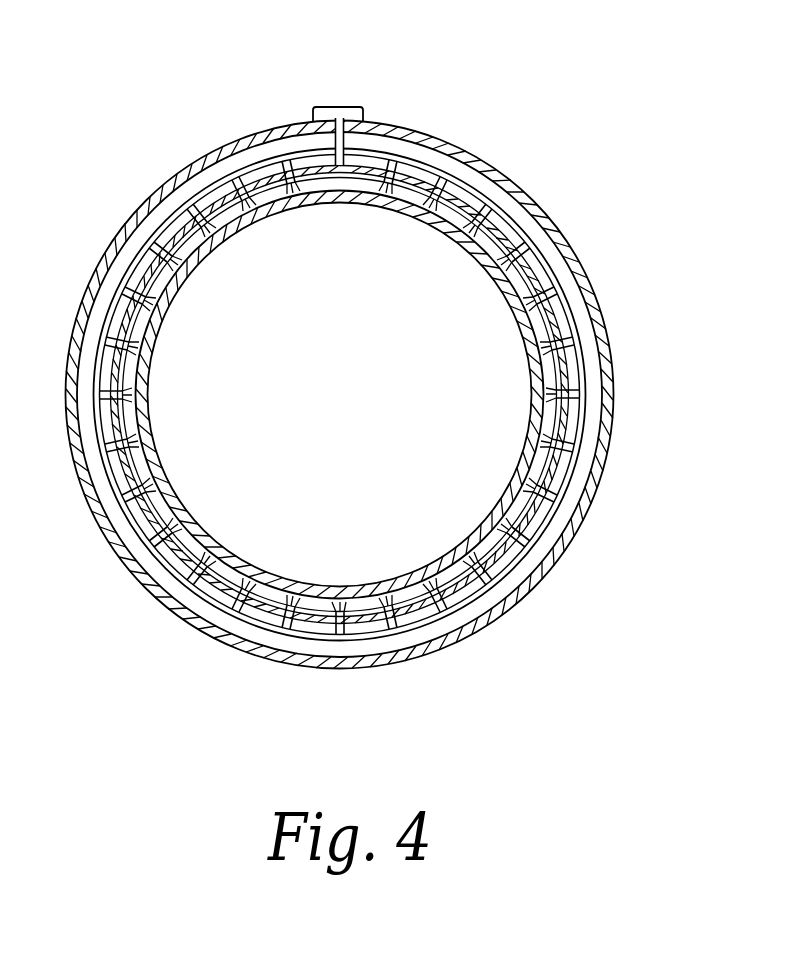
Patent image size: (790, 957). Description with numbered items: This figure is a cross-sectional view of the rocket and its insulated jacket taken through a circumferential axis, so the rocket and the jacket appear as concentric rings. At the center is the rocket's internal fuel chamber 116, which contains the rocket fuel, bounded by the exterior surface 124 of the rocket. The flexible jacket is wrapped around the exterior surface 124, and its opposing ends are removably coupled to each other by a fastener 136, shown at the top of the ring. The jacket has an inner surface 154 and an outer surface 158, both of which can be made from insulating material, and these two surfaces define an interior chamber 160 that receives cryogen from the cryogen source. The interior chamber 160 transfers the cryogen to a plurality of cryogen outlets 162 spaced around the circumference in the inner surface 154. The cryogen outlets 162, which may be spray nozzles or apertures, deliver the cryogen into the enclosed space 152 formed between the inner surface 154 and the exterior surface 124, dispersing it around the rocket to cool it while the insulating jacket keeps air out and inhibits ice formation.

The internal fuel chamber 116 is at (355, 405).
The exterior surface 124 is at (515, 292).
The fastener 136 is at (338, 107).
The enclosed space 152 is at (522, 512).
The inner surface 154 is at (495, 547).
The outer surface 158 is at (612, 355).
The interior chamber 160 is at (587, 452).
The cryogen outlets 162 is at (452, 185).